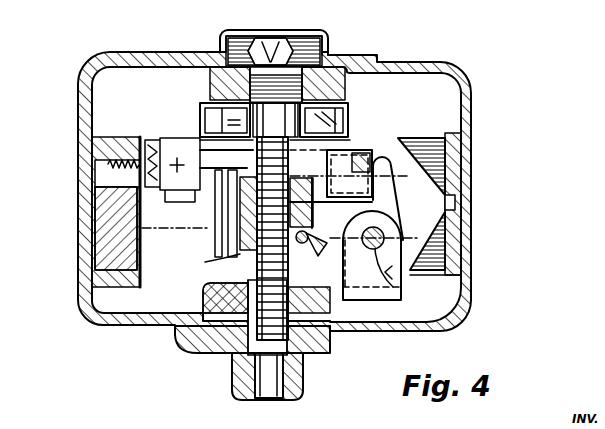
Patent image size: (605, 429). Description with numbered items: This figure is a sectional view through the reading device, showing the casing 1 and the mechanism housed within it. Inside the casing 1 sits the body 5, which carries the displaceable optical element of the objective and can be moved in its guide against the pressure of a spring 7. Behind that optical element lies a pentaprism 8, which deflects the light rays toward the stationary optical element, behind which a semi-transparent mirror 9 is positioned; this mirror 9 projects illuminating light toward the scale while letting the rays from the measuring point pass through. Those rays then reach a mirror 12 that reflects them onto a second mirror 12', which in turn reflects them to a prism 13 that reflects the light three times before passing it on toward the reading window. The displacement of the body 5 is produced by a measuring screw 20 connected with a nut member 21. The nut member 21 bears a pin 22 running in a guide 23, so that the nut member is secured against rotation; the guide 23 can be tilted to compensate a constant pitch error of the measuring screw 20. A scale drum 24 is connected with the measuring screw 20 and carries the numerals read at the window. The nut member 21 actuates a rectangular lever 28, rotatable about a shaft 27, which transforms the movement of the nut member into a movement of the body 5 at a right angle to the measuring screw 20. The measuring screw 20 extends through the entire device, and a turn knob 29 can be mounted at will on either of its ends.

The casing 1 is at (459, 91).
The body 5 is at (173, 212).
The spring 7 is at (127, 150).
The pentaprism 8 is at (174, 138).
The semi-transparent mirror 9 is at (353, 150).
The mirror 12 is at (452, 204).
The mirror 12' is at (460, 243).
The prism 13 is at (100, 238).
The measuring screw 20 is at (182, 338).
The nut member 21 is at (243, 265).
The pin 22 is at (218, 229).
The guide 23 is at (217, 197).
The scale drum 24 is at (337, 108).
The shaft 27 is at (386, 265).
The rectangular lever 28 is at (328, 250).
The turn knob 29 is at (302, 380).